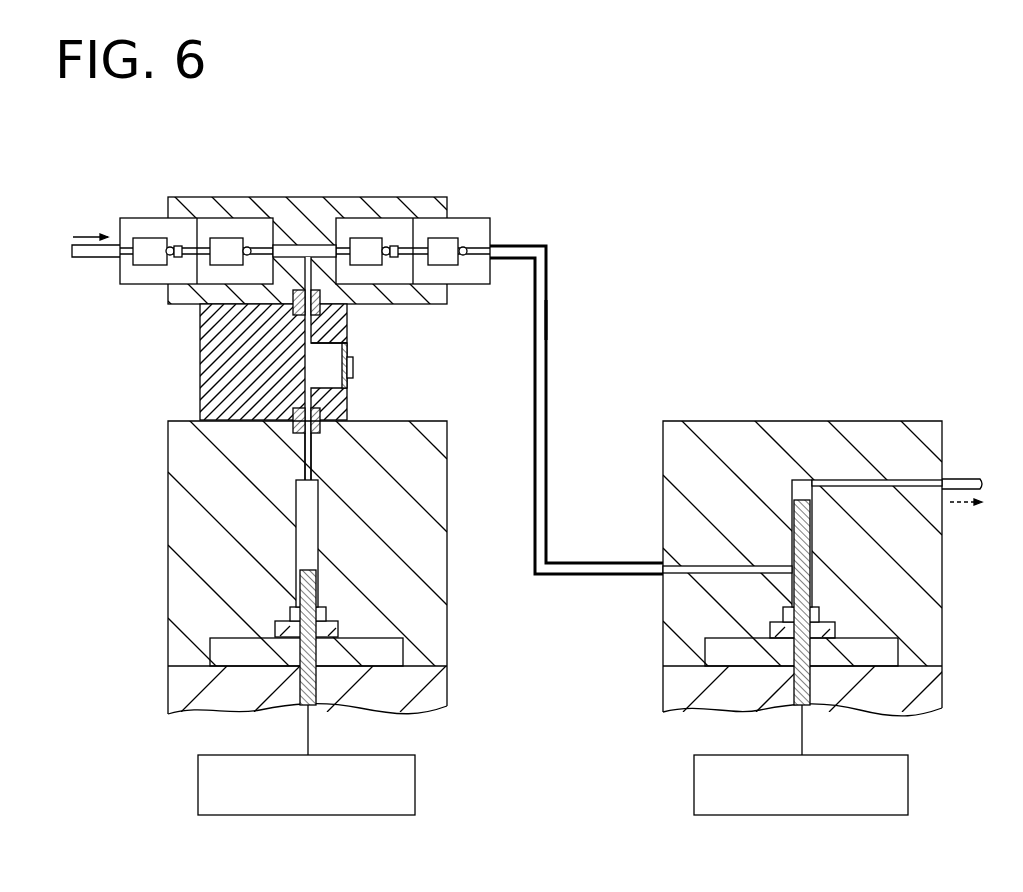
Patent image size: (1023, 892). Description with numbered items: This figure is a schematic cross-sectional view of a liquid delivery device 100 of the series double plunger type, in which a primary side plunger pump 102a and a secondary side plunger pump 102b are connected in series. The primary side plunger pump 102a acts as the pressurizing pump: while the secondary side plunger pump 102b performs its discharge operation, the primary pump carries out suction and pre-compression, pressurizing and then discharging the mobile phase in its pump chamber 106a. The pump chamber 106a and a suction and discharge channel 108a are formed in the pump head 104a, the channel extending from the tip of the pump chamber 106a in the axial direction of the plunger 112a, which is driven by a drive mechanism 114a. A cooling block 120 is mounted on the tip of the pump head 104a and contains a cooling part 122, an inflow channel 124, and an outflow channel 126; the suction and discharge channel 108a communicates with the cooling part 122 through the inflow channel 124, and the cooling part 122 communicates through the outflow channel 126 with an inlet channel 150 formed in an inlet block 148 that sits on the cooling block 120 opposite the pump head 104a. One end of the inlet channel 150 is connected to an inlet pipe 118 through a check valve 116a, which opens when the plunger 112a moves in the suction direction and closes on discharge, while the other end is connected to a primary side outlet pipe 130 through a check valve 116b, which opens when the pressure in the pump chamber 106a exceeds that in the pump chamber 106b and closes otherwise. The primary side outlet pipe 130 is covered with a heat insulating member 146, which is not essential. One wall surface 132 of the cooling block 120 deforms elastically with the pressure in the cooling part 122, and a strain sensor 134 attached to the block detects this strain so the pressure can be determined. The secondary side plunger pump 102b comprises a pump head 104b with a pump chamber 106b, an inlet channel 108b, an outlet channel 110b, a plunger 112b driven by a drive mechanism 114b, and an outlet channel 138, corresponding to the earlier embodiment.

The liquid delivery device 100 is at (688, 167).
The primary side plunger pump 102a is at (289, 536).
The secondary side plunger pump 102b is at (783, 537).
The pump head 104a is at (168, 437).
The pump head 104b is at (685, 472).
The pump chamber 106a is at (305, 550).
The pump chamber 106b is at (803, 487).
The suction and discharge channel 108a is at (307, 453).
The inlet channel 108b is at (760, 567).
The outlet channel 110b is at (878, 483).
The plunger 112a is at (297, 653).
The plunger 112b is at (793, 652).
The drive mechanism 114a is at (198, 773).
The drive mechanism 114b is at (908, 775).
The check valve 116a is at (157, 218).
The check valve 116b is at (382, 224).
The inlet pipe 118 is at (95, 258).
The cooling block 120 is at (200, 373).
The cooling part 122 is at (348, 384).
The inflow channel 124 is at (325, 390).
The outflow channel 126 is at (343, 322).
The primary side outlet pipe 130 is at (542, 291).
The wall surface 132 is at (350, 352).
The strain sensor 134 is at (353, 366).
The outlet channel 138 is at (962, 478).
The heat insulating member 146 is at (548, 325).
The inlet block 148 is at (252, 197).
The inlet channel 150 is at (308, 252).